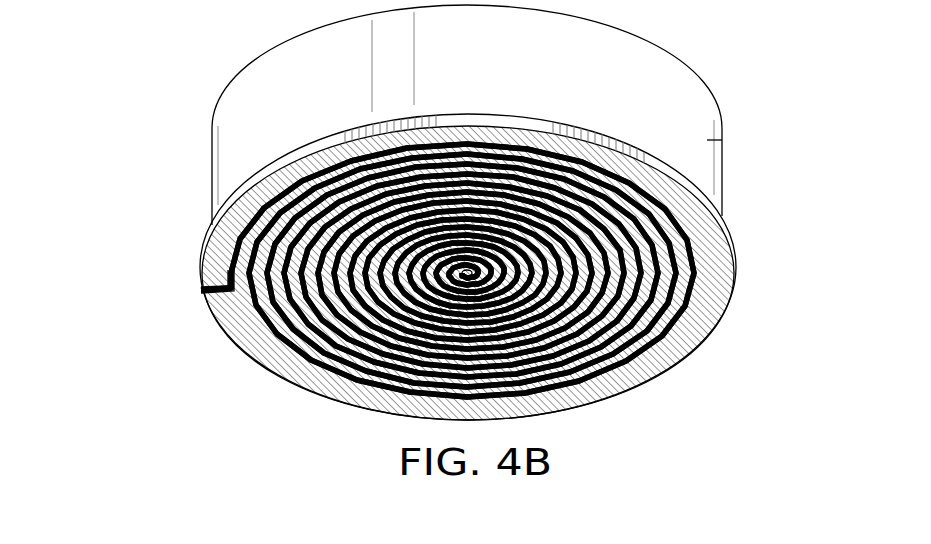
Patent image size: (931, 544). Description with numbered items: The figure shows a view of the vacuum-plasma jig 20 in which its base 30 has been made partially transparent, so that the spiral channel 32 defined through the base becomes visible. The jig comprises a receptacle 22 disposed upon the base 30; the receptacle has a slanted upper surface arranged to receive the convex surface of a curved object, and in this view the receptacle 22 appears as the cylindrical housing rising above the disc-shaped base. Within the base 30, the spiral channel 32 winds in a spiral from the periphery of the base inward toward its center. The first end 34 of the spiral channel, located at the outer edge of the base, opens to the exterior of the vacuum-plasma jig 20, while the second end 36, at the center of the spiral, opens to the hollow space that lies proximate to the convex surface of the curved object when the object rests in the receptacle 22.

The vacuum-plasma jig 20 is at (439, 212).
The receptacle 22 is at (722, 140).
The base 30 is at (433, 267).
The spiral channel 32 is at (225, 250).
The first end 34 is at (205, 293).
The second end 36 is at (460, 276).